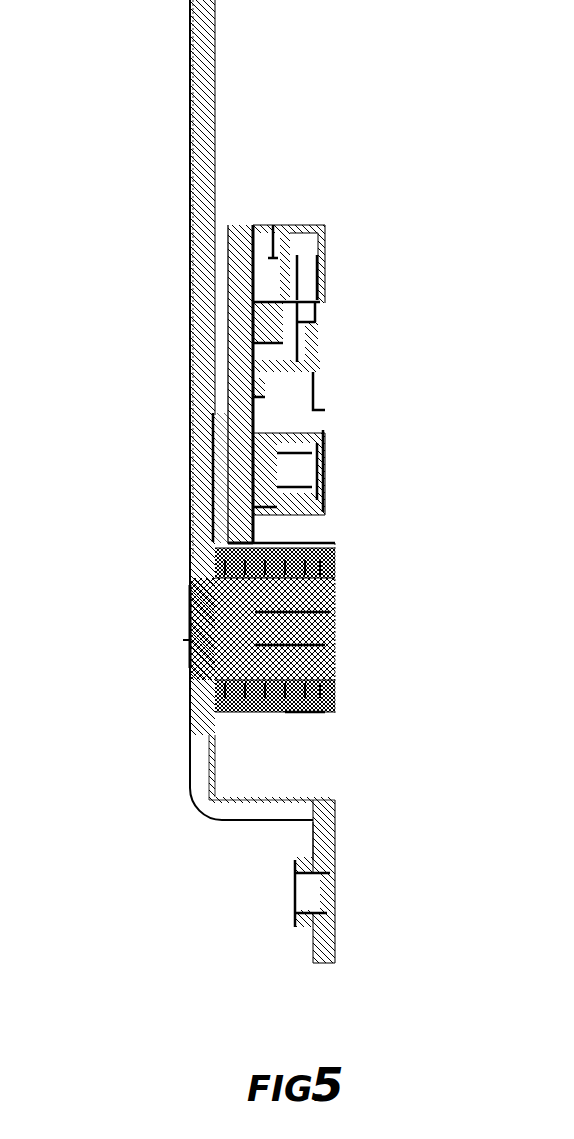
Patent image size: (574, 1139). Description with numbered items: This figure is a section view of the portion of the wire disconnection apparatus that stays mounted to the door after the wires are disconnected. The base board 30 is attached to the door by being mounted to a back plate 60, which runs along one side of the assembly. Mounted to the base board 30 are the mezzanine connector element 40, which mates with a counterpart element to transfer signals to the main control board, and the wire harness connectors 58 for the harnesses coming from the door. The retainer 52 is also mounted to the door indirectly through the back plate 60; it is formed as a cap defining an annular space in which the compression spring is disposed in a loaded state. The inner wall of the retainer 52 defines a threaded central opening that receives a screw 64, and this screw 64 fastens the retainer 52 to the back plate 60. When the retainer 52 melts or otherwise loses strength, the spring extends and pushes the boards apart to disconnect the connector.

The back plate 60 is at (197, 47).
The base board 30 is at (243, 230).
The wire harness connector 58 is at (278, 237).
The male connector element 40 is at (317, 467).
The retainer 52 is at (328, 597).
The screw 64 is at (215, 625).